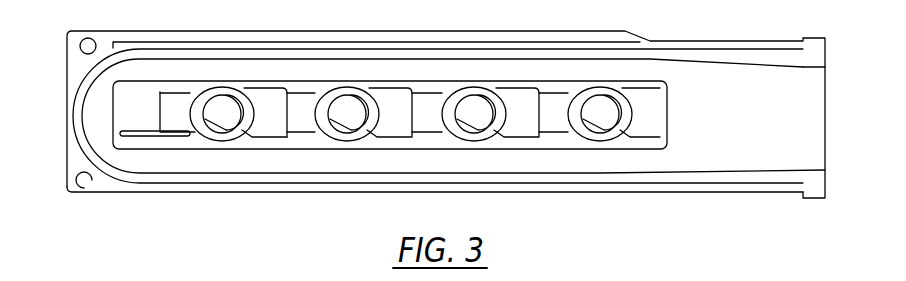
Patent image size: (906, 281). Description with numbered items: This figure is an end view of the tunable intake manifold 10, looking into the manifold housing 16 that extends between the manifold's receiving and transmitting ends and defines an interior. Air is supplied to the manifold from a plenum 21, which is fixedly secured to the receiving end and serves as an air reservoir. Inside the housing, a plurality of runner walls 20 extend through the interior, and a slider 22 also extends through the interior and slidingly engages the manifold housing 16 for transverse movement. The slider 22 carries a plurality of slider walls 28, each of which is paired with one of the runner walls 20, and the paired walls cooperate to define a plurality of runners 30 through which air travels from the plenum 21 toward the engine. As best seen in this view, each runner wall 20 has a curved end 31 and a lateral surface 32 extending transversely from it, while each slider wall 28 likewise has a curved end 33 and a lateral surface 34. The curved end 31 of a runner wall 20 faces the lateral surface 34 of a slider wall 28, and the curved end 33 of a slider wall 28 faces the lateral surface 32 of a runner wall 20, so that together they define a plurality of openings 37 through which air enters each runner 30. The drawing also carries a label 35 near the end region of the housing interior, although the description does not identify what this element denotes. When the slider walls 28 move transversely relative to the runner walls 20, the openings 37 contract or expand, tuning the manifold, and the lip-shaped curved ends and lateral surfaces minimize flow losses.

The tunable intake manifold 10 is at (432, 137).
The manifold housing 16 is at (287, 186).
The runner walls 20 is at (249, 97).
The plenum 21 is at (70, 156).
The slider 22 is at (305, 141).
The slider walls 28 is at (212, 119).
The runners 30 is at (220, 97).
The curved end 31 is at (252, 88).
The lateral surface 32 is at (196, 80).
The curved end 33 is at (198, 137).
The lateral surface 34 is at (256, 140).
The end cavity 35 is at (168, 108).
The openings 37 is at (223, 95).